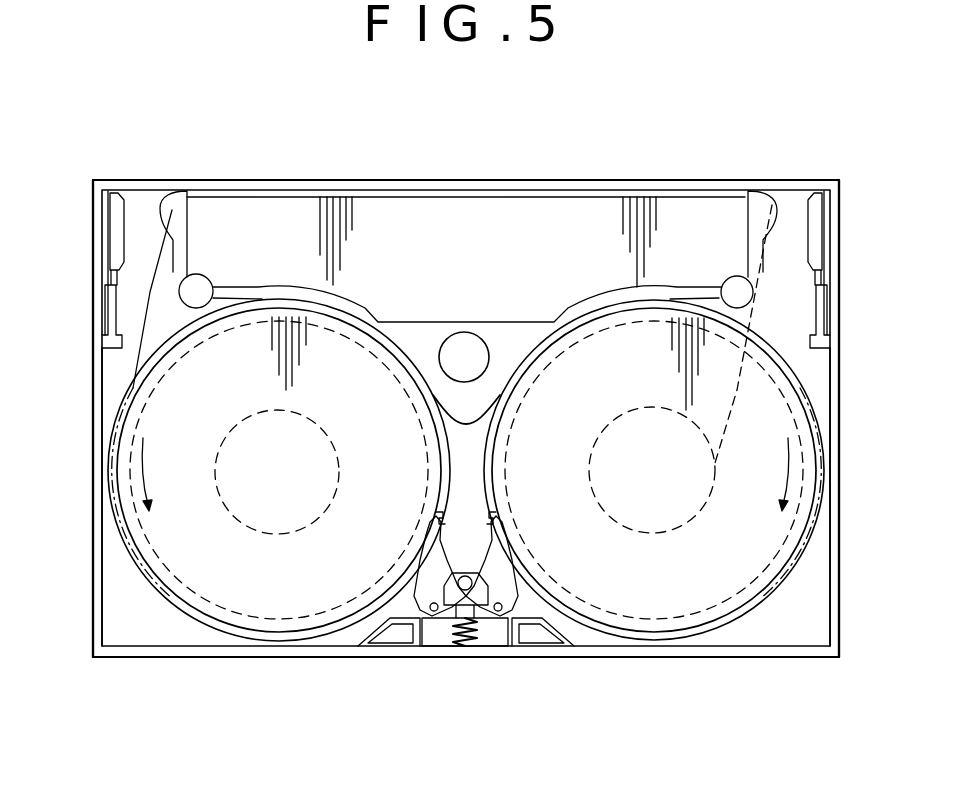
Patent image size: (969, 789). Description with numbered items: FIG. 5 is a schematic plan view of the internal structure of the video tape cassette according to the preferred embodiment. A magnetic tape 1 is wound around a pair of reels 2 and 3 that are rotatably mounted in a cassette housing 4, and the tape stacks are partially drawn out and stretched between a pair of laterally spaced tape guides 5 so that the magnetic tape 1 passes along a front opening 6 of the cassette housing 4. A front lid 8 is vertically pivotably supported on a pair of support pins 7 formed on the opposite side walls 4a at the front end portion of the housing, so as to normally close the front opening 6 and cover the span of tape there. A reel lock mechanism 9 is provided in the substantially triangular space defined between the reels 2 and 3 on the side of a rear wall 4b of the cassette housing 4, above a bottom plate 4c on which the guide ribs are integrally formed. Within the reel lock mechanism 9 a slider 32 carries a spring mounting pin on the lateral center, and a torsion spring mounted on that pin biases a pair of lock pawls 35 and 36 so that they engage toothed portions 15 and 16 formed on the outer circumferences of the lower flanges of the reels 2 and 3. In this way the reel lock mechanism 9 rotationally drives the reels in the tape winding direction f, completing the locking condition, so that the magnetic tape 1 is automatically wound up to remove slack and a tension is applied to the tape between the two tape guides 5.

The magnetic tape 1 is at (446, 186).
The reel 2 is at (222, 598).
The reel 3 is at (690, 608).
The cassette housing 4 is at (282, 661).
The side wall 4a is at (93, 402).
The rear wall 4b is at (395, 640).
The bottom plate 4c is at (572, 640).
The tape guide 5 is at (178, 205).
The front opening 6 is at (574, 212).
The support pin 7 is at (112, 281).
The front lid 8 is at (335, 182).
The reel lock mechanism 9 is at (484, 625).
The toothed portion 15 is at (437, 516).
The toothed portion 16 is at (492, 516).
The slider 32 is at (466, 574).
The lock pawl 35 is at (420, 578).
The lock pawl 36 is at (512, 578).
The tape winding direction f is at (146, 488).